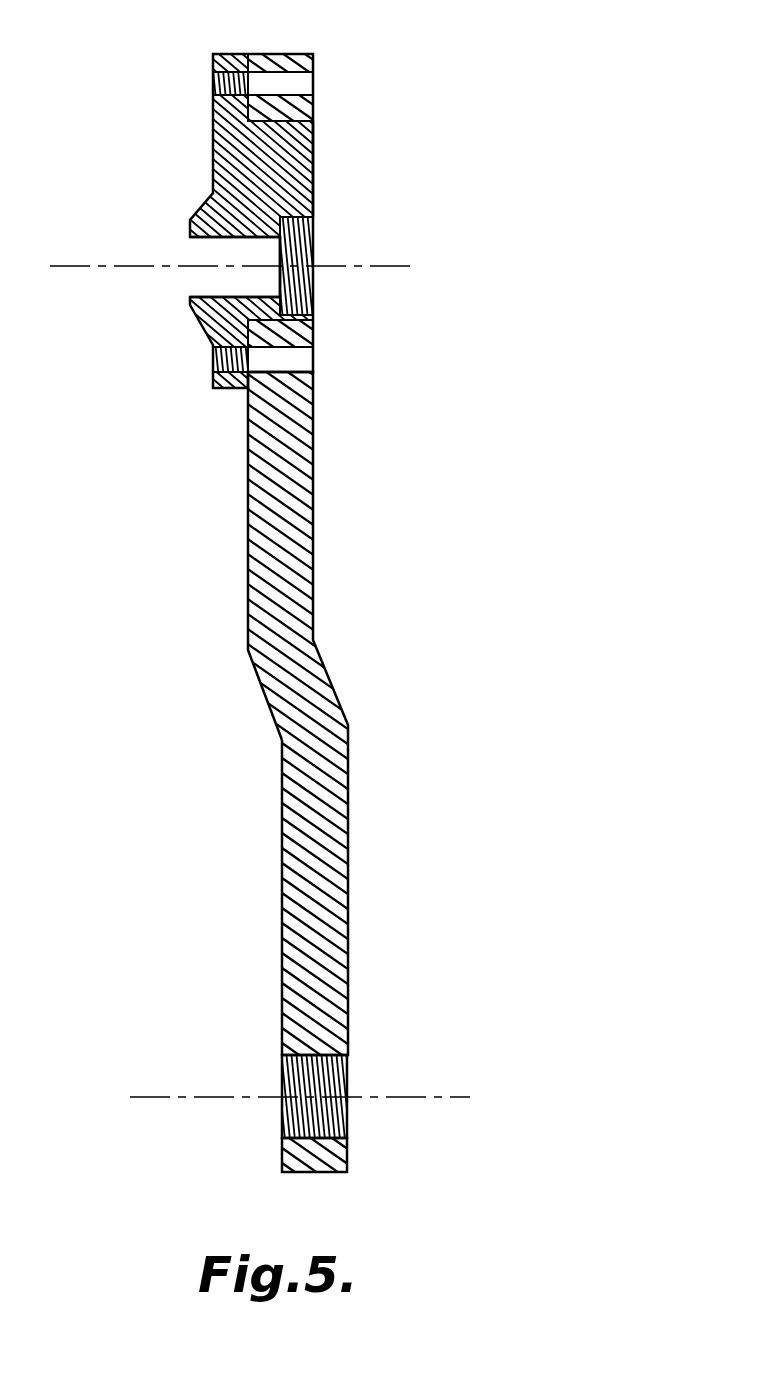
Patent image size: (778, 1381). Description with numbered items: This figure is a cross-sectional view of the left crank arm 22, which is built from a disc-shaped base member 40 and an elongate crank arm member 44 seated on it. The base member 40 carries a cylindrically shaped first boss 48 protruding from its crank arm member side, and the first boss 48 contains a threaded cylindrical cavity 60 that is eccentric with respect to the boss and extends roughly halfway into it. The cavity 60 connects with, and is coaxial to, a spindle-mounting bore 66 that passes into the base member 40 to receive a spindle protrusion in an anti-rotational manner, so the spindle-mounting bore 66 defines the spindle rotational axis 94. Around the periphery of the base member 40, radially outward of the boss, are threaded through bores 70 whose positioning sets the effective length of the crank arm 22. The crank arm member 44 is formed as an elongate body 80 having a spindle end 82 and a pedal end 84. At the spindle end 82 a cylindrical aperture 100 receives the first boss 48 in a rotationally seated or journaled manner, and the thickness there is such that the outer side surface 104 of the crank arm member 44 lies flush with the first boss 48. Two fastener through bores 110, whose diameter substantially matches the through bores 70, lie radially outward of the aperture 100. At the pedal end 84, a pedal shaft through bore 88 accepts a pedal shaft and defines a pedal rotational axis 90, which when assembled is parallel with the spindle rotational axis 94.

The crank arm 22 is at (508, 238).
The base member 40 is at (225, 172).
The crank arm member 44 is at (228, 560).
The first boss 48 is at (315, 193).
The threaded cylindrical cavity 60 is at (307, 242).
The spindle-mounting bore 66 is at (225, 237).
The through bores 70 is at (232, 95).
The elongate body 80 is at (348, 827).
The spindle end 82 is at (315, 107).
The pedal end 84 is at (348, 1150).
The pedal shaft through bore 88 is at (285, 1133).
The pedal rotational axis 90 is at (418, 1097).
The spindle rotational axis 94 is at (102, 262).
The cylindrical aperture 100 is at (292, 134).
The outer side surface 104 is at (313, 503).
The fastener through bores 110 is at (313, 54).